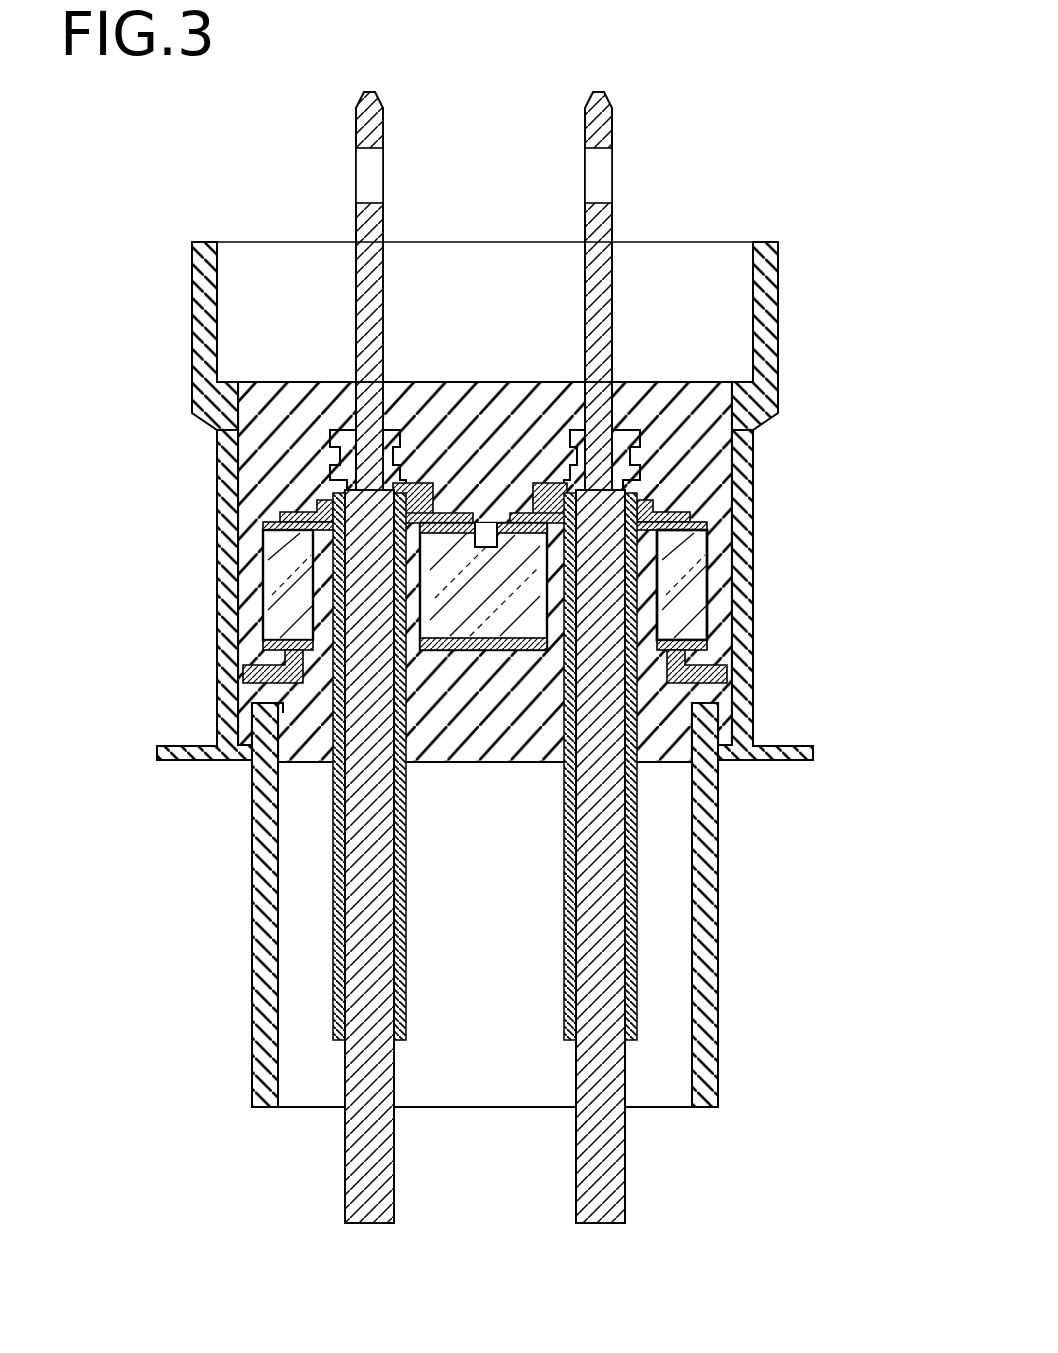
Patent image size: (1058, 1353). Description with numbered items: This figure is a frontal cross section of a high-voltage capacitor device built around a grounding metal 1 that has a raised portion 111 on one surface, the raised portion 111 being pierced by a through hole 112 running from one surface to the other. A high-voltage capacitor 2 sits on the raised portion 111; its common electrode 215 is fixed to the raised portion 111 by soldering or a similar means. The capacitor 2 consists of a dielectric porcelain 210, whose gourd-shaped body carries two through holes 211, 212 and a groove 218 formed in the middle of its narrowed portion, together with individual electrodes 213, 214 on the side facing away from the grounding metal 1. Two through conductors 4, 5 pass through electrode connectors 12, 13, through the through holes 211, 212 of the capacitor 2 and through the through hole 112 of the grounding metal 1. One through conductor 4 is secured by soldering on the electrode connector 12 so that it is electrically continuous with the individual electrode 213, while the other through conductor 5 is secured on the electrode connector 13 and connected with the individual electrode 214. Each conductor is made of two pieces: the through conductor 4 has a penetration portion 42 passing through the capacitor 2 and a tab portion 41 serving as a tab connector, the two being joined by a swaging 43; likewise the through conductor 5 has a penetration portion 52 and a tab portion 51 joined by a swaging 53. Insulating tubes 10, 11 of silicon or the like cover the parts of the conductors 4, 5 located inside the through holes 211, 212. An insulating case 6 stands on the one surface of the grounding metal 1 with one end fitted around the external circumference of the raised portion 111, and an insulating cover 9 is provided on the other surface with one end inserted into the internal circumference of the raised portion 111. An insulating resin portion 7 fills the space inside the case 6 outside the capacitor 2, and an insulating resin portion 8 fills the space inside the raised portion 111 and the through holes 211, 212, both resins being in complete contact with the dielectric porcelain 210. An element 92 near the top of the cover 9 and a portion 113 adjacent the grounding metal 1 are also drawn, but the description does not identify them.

The grounding metal 1 is at (815, 752).
The high-voltage capacitor 2 is at (226, 549).
The through conductor 4 is at (372, 705).
The through conductor 5 is at (647, 696).
The insulating case 6 is at (778, 318).
The insulating resin portion 7 is at (556, 402).
The insulating resin portion 8 is at (512, 765).
The insulating cover 9 is at (718, 858).
The insulating tube 10 is at (335, 922).
The insulating tube 11 is at (637, 927).
The electrode connector 12 is at (307, 493).
The electrode connector 13 is at (663, 493).
The tab portion 41 is at (356, 125).
The penetration portion 42 is at (394, 1140).
The swaging 43 is at (330, 445).
The tab portion 51 is at (612, 112).
The penetration portion 52 is at (626, 1135).
The swaging 53 is at (630, 445).
The opening 92 is at (284, 704).
The raised portion 111 is at (720, 647).
The through hole 112 is at (657, 707).
The second hook portion 113 is at (240, 679).
The dielectric porcelain 210 is at (690, 600).
The through hole 211 is at (320, 565).
The through hole 212 is at (650, 578).
The individual electrode 213 is at (280, 520).
The individual electrode 214 is at (690, 520).
The common electrode 215 is at (462, 652).
The groove 218 is at (480, 537).